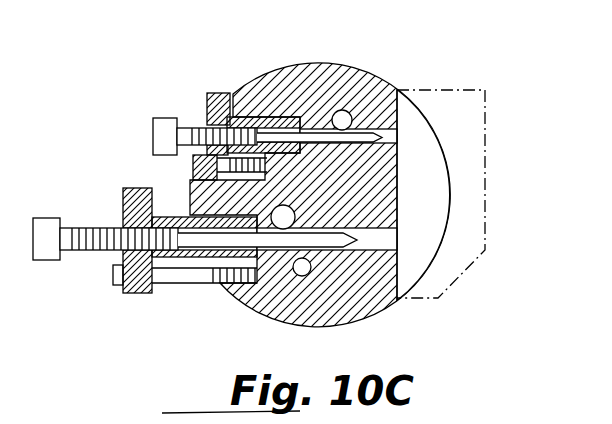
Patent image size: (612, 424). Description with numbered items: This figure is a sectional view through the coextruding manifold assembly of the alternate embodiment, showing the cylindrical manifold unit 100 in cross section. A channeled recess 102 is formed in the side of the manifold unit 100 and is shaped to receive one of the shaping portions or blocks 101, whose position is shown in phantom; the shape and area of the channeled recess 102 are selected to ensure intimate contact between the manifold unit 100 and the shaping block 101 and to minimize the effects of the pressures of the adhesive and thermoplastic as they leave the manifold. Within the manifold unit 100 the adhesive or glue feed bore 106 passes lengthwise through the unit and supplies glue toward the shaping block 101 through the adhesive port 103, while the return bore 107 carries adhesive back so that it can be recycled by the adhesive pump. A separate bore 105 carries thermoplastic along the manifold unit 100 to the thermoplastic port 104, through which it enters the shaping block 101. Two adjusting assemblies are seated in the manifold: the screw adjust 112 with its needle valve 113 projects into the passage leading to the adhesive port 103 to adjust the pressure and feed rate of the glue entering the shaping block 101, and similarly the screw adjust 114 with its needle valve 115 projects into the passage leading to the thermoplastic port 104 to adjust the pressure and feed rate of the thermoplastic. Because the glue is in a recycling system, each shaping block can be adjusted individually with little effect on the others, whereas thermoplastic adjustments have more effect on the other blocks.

The manifold unit 100 is at (293, 72).
The shaping portion or block 101 is at (487, 150).
The channeled recess 102 is at (430, 257).
The adhesive port 103 is at (392, 137).
The thermoplastic port 104 is at (393, 243).
The bore 105 is at (292, 214).
The adhesive or glue feed bore 106 is at (343, 110).
The return bore 107 is at (308, 273).
The screw adjust 112 is at (193, 130).
The needle valve 113 is at (370, 133).
The screw adjust 114 is at (80, 245).
The needle valve 115 is at (292, 245).